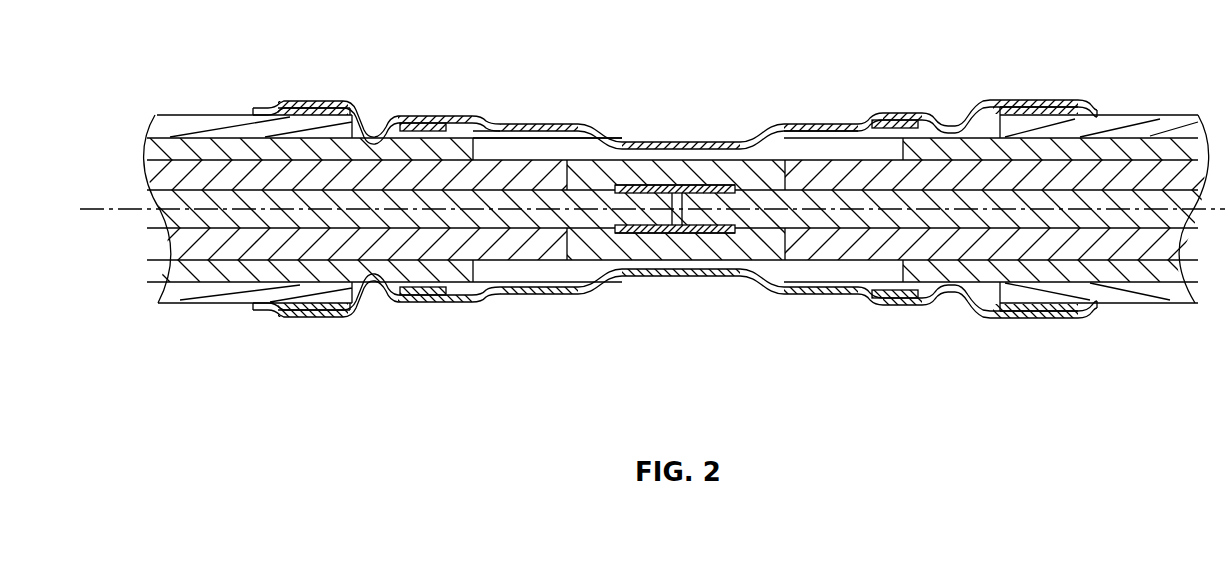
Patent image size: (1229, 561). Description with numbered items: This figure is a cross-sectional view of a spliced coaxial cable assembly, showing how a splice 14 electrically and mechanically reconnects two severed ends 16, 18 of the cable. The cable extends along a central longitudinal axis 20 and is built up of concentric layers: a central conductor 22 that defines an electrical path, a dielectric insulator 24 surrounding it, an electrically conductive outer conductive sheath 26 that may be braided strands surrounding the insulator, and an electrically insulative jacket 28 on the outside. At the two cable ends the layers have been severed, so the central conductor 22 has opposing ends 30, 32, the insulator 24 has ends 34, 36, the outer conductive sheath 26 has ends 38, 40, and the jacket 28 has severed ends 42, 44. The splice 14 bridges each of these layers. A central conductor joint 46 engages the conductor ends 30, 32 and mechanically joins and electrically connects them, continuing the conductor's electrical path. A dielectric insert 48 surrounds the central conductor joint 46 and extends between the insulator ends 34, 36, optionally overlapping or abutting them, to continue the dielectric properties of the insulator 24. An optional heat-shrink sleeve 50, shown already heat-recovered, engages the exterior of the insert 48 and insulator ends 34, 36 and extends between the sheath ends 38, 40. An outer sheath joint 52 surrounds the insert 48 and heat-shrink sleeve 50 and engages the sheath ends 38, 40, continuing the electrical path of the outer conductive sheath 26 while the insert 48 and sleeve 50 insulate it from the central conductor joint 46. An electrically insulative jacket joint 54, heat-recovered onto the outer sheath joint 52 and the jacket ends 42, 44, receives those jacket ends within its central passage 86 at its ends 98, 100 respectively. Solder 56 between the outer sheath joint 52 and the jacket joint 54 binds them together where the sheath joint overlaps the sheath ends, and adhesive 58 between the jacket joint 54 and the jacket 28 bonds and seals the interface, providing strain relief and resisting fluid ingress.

The splice 14 is at (659, 338).
The end of the coaxial cable 16 is at (828, 322).
The end of the coaxial cable 18 is at (529, 322).
The central longitudinal axis 20 is at (127, 213).
The central conductor 22 is at (160, 202).
The insulator 24 is at (220, 170).
The outer conductive sheath 26 is at (242, 282).
The jacket 28 is at (188, 297).
The end of the central conductor 30 is at (763, 188).
The end of the central conductor 32 is at (592, 233).
The end of the insulator 34 is at (842, 155).
The end of the insulator 36 is at (510, 262).
The end of the outer conductive sheath 38 is at (940, 289).
The end of the outer conductive sheath 40 is at (412, 293).
The severed end of the jacket 42 is at (1124, 306).
The severed end of the jacket 44 is at (224, 115).
The central conductor joint 46 is at (677, 240).
The dielectric insert 48 is at (727, 168).
The heat-shrink sleeve 50 is at (663, 168).
The outer sheath joint 52 is at (550, 124).
The jacket joint 54 is at (610, 134).
The solder 56 is at (457, 120).
The adhesive 58 is at (308, 118).
The central passage 86 is at (1115, 130).
The end of the jacket joint 98 is at (1036, 101).
The end of the jacket joint 100 is at (313, 320).